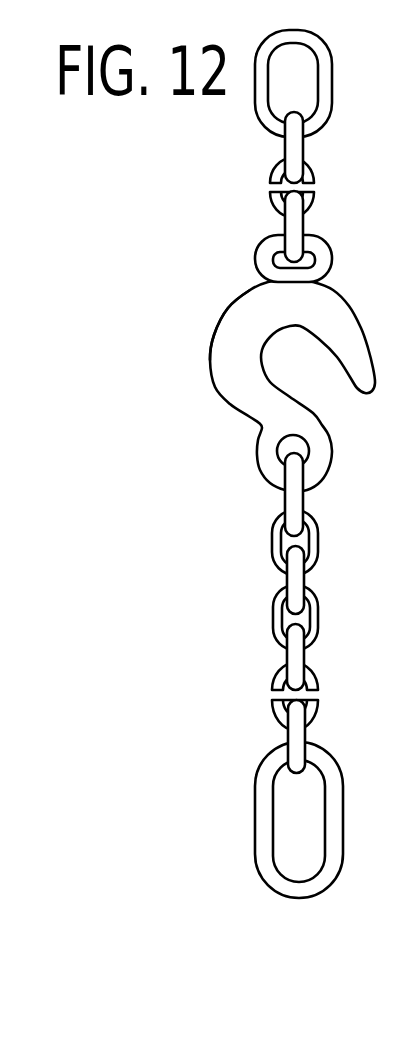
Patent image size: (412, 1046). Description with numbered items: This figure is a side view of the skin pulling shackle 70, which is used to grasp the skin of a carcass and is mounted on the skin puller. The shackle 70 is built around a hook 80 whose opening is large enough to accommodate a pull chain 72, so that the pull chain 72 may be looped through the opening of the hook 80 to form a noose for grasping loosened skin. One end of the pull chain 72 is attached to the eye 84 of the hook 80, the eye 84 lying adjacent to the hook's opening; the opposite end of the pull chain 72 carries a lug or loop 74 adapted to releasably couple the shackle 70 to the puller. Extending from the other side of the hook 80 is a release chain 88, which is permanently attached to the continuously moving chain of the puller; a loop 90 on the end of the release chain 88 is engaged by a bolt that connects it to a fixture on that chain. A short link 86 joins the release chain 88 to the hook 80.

The shackle 70 is at (232, 360).
The pull chain 72 is at (316, 537).
The lug or loop 74 is at (267, 822).
The hook 80 is at (240, 319).
The eye 84 is at (317, 462).
The connecting link 86 is at (270, 261).
The release chain 88 is at (302, 167).
The loop 90 is at (323, 100).